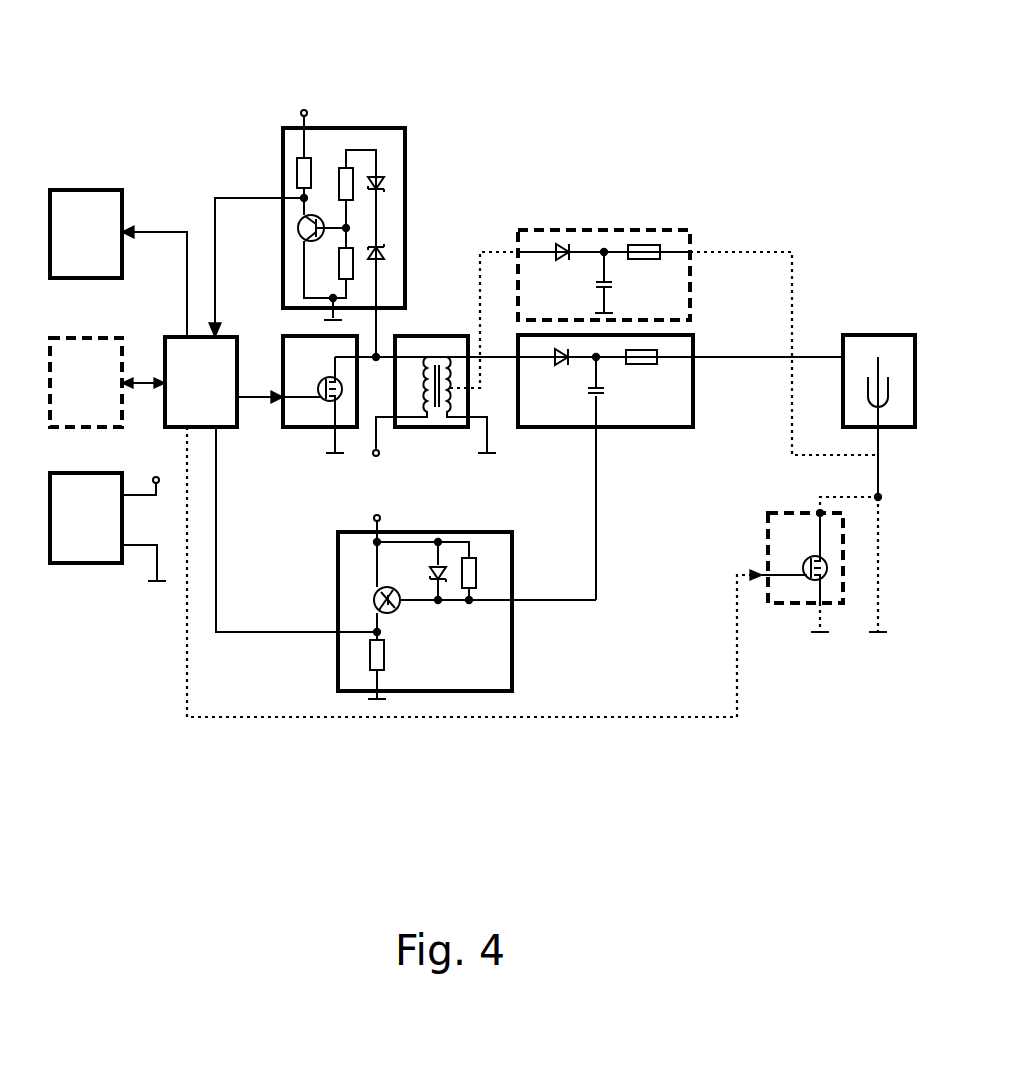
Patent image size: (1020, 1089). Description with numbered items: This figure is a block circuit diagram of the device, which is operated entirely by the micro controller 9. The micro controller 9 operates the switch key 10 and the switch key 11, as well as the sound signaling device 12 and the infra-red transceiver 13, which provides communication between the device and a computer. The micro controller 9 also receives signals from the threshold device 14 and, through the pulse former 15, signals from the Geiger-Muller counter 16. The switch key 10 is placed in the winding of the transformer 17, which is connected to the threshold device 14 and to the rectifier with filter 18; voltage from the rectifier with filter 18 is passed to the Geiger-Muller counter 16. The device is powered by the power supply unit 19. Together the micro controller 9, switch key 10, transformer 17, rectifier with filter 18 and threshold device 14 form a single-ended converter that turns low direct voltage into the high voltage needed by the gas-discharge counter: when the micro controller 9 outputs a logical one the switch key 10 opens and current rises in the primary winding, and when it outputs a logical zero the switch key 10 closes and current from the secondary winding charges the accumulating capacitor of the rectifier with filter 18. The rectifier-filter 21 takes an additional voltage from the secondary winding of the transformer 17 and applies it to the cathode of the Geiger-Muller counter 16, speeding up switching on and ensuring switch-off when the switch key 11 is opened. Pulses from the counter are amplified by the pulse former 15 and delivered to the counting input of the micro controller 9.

The micro controller 9 is at (222, 350).
The switch key 10 is at (305, 427).
The switch key 11 is at (788, 598).
The sound signaling device 12 is at (122, 190).
The infra-red transceiver 13 is at (105, 417).
The threshold device 14 is at (388, 138).
The pulse former 15 is at (448, 657).
The Geiger-Muller counter 16 is at (868, 417).
The transformer 17 is at (437, 420).
The rectifier with filter 18 is at (648, 405).
The power supply unit 19 is at (60, 553).
The rectifier-filter 21 is at (680, 235).